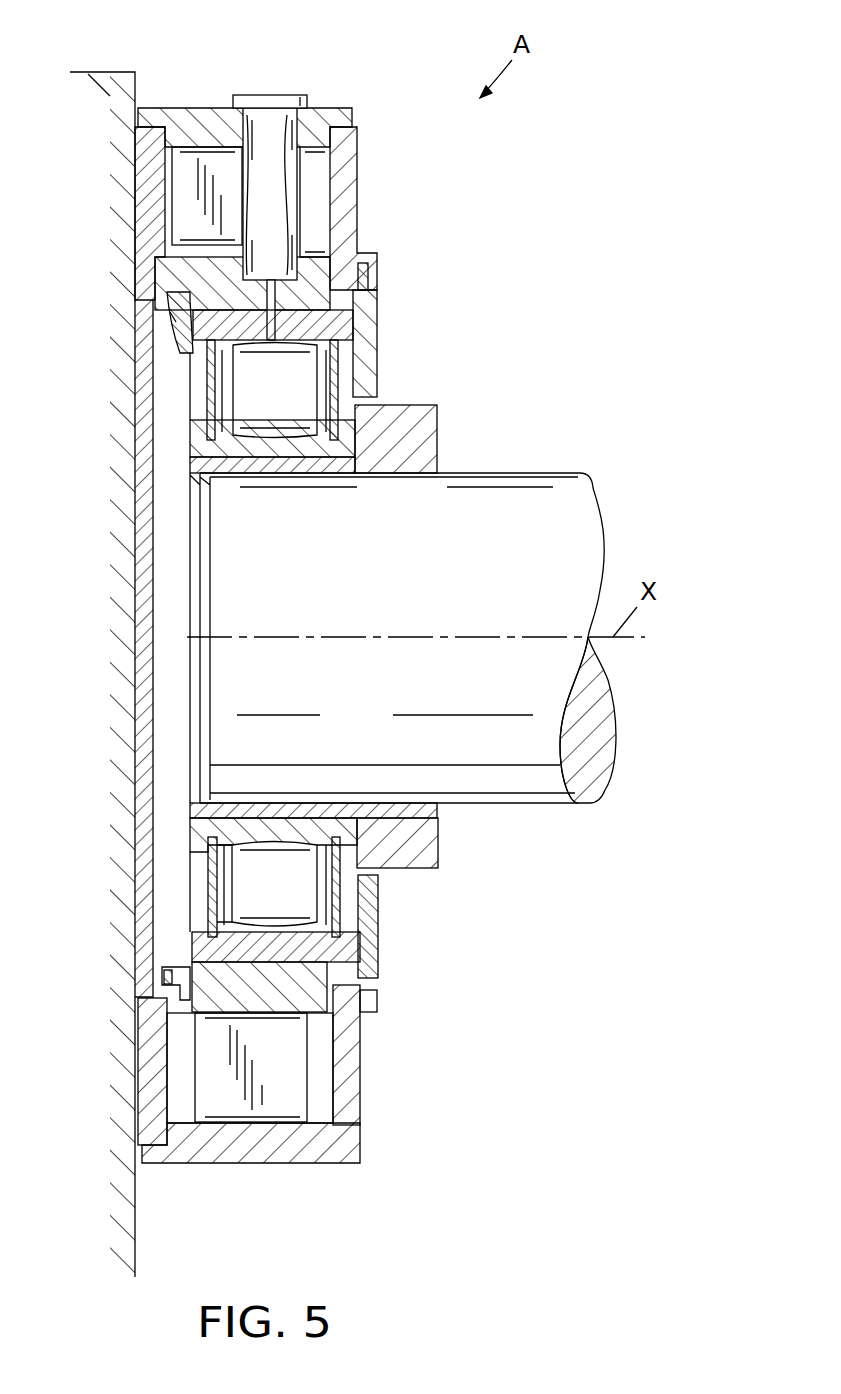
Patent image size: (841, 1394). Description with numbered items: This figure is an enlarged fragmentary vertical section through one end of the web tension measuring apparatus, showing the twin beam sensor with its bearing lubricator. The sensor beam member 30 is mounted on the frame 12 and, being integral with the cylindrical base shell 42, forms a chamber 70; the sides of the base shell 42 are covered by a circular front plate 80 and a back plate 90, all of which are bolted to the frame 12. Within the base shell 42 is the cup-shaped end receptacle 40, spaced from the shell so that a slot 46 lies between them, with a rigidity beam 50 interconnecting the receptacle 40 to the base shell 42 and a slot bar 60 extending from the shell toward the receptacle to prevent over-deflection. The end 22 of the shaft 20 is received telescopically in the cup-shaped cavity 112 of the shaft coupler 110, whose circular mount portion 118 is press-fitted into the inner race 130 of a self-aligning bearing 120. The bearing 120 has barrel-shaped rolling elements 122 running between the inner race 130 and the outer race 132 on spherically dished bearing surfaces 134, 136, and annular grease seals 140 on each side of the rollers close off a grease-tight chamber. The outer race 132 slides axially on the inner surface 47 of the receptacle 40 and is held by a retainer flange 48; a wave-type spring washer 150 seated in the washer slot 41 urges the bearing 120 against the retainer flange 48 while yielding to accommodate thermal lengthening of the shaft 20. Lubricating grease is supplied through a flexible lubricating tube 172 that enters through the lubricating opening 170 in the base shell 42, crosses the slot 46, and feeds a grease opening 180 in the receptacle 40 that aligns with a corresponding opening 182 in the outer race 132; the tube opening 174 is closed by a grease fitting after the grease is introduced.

The frame 12 is at (108, 72).
The shaft 20 is at (587, 525).
The end of shaft 22 is at (217, 597).
The sensor beam member 30 is at (207, 1017).
The cup-shaped end receptacle 40 is at (203, 267).
The washer slot 41 is at (180, 977).
The base shell 42 is at (187, 117).
The slot 46 is at (168, 193).
The inner surface of receptacle 47 is at (173, 313).
The retainer flange 48 is at (370, 365).
The rigidity beam 50 is at (297, 1067).
The slot bar 60 is at (183, 177).
The chamber 70 is at (165, 708).
The front plate 80 is at (347, 157).
The back plate 90 is at (148, 512).
The shaft coupler 110 is at (445, 438).
The cup-shaped cavity 112 is at (380, 798).
The circular mount portion 118 is at (215, 455).
The self-aligning bearing 120 is at (350, 897).
The rolling elements 122 is at (300, 860).
The inner race 130 is at (200, 832).
The outer race 132 is at (347, 947).
The bearing surface of inner race 134 is at (267, 838).
The bearing surface of outer race 136 is at (290, 855).
The annular grease seal 140 is at (212, 862).
The spring washer 150 is at (170, 318).
The lubricating opening 170 is at (313, 113).
The lubricating tube 172 is at (285, 193).
The tube opening 174 is at (288, 95).
The grease opening 180 is at (287, 290).
The opening in outer race 182 is at (280, 338).